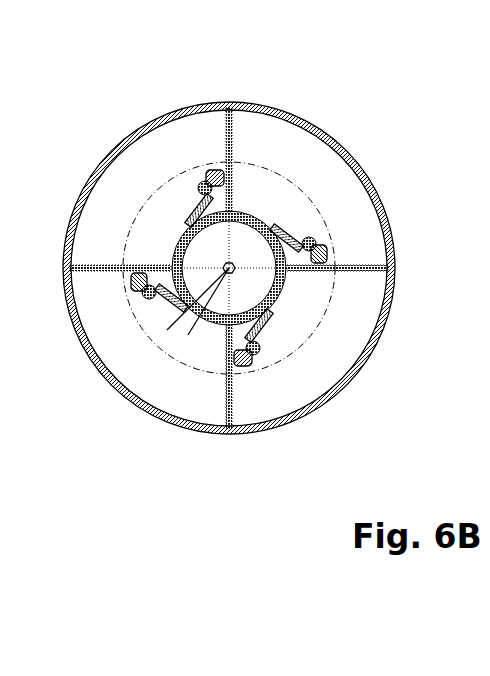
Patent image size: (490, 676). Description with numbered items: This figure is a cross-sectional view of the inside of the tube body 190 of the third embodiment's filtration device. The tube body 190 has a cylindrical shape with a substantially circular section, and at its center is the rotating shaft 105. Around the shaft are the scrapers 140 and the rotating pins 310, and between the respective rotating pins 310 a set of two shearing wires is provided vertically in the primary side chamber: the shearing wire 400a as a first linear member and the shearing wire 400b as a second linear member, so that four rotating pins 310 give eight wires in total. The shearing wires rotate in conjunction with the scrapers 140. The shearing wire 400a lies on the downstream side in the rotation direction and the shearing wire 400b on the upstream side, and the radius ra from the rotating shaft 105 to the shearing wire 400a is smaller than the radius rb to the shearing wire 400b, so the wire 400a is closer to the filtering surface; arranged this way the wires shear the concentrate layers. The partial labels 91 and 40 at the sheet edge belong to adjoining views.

The rotating shaft 105 is at (234, 271).
The scraper 140 is at (183, 207).
The rotating pin 310 is at (212, 172).
The shearing wire (first linear member) 400a is at (266, 205).
The shearing wire (second linear member) 400b is at (287, 210).
The tube body 190 is at (0, 313).
The member 91 is at (0, 402).
The frame 40 is at (11, 130).